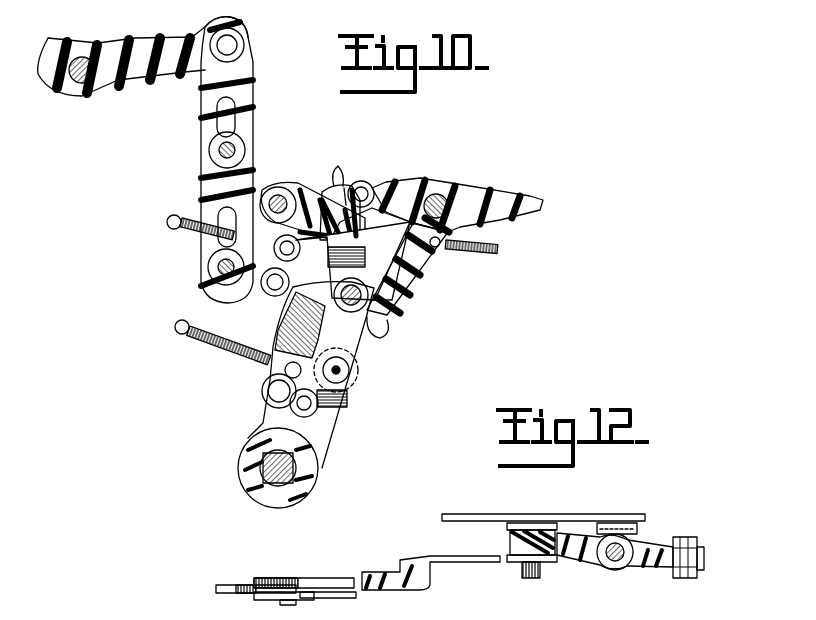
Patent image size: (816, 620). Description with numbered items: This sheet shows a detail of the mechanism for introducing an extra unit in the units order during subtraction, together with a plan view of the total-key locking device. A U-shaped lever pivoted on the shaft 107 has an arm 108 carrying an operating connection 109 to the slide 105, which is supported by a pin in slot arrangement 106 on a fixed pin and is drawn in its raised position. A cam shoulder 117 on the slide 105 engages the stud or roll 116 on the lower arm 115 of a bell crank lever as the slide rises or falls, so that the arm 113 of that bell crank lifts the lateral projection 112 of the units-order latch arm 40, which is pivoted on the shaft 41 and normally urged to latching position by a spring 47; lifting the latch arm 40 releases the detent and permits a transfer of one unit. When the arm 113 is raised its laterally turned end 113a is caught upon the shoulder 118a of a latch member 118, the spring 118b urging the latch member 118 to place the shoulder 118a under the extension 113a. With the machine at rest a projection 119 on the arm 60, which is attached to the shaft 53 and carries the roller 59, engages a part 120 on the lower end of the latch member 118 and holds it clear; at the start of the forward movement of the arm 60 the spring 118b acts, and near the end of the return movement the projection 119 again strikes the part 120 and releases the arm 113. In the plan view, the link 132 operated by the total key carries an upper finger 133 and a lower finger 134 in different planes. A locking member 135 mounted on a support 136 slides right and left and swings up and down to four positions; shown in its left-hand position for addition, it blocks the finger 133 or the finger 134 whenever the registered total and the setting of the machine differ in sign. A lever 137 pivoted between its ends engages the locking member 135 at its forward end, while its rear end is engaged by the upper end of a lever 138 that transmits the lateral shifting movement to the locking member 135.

In FIG. 10, the arm 108 is at (142, 52).
In FIG. 10, the shaft 107 is at (80, 84).
In FIG. 10, the slide 105 is at (254, 134).
In FIG. 10, the operating connection 109 is at (238, 46).
In FIG. 10, the pin in slot arrangement 106 is at (225, 120).
In FIG. 10, the cam shoulder 117 is at (280, 188).
In FIG. 10, the stud or roll 116 is at (268, 296).
In FIG. 10, the lower arm 115 is at (284, 262).
In FIG. 10, the arm 113 is at (326, 190).
In FIG. 10, the laterally turned end 113a is at (368, 190).
In FIG. 10, the lateral projection 112 is at (364, 184).
In FIG. 10, the shoulder 118a is at (346, 186).
In FIG. 10, the shaft 41 is at (462, 194).
In FIG. 10, the latch arm 40 is at (428, 196).
In FIG. 10, the spring 47 is at (478, 250).
In FIG. 10, the latch member 118 is at (290, 320).
In FIG. 10, the part 120 is at (318, 400).
In FIG. 10, the shaft 53 is at (278, 474).
In FIG. 10, the roller 59 is at (344, 376).
In FIG. 10, the arm 60 is at (322, 406).
In FIG. 10, the projection 119 is at (270, 396).
In FIG. 10, the spring 118b is at (220, 350).
In FIG. 12, the locking member 135 is at (448, 560).
In FIG. 12, the link 132 is at (230, 590).
In FIG. 12, the upper finger 133 is at (328, 578).
In FIG. 12, the lower finger 134 is at (334, 594).
In FIG. 12, the support 136 is at (543, 578).
In FIG. 12, the lever 137 is at (617, 568).
In FIG. 12, the lever 138 is at (702, 572).